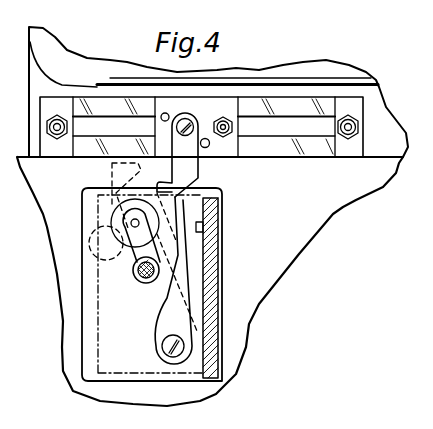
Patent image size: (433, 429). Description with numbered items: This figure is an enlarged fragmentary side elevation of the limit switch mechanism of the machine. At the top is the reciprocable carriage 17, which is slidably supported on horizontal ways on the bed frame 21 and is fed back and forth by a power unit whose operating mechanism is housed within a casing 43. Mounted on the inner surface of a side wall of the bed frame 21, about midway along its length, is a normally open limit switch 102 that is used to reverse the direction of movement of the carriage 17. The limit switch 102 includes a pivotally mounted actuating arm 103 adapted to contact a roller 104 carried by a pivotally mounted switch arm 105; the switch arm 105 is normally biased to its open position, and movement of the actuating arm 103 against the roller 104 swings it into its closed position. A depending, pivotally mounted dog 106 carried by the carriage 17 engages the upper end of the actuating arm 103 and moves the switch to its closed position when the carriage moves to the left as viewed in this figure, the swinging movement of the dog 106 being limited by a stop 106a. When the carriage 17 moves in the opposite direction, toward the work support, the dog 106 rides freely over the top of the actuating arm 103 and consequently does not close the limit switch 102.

The reciprocable carriage 17 is at (372, 93).
The bed frame 21 is at (318, 221).
The casing 43 is at (338, 70).
The limit switch 102 is at (98, 318).
The actuating arm 103 is at (167, 297).
The roller 104 is at (92, 224).
The switch arm 105 is at (135, 275).
The dog 106 is at (207, 170).
The stop 106a is at (210, 146).